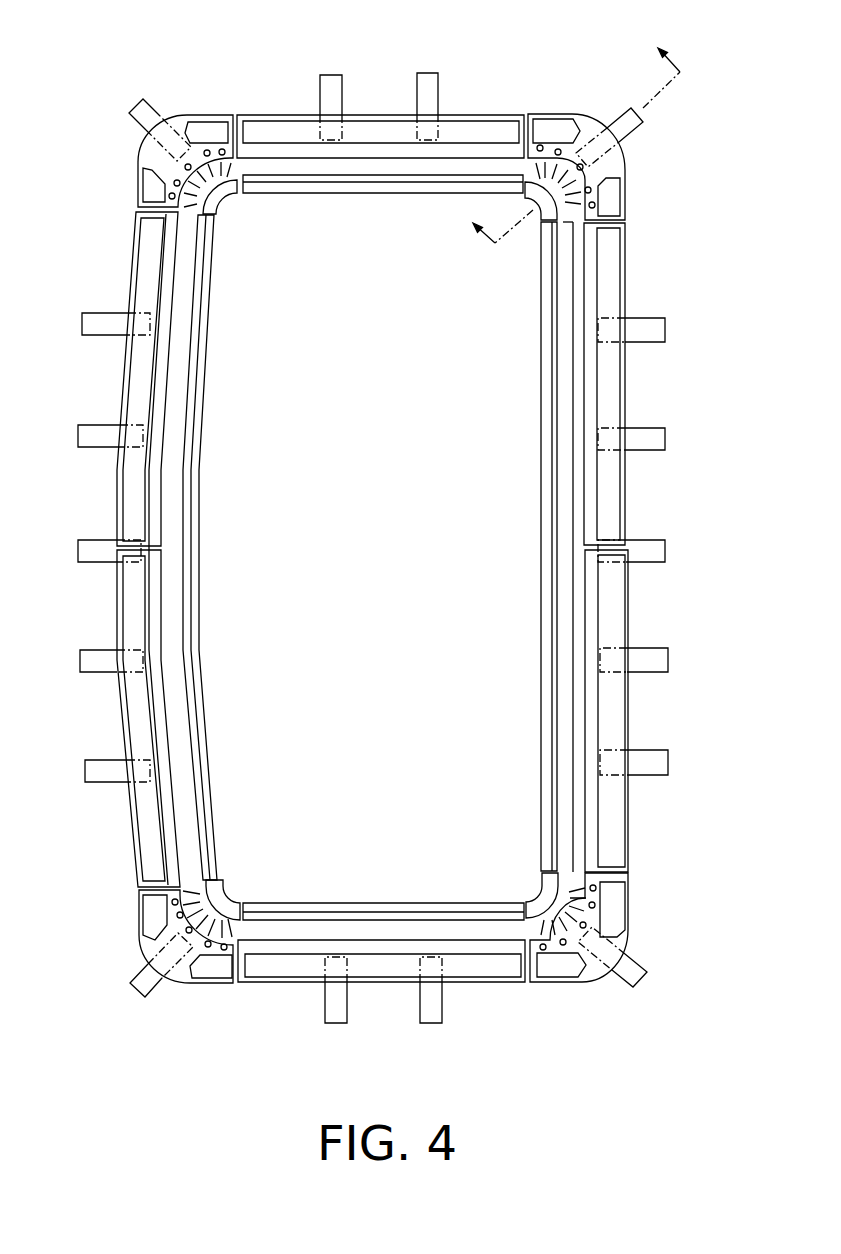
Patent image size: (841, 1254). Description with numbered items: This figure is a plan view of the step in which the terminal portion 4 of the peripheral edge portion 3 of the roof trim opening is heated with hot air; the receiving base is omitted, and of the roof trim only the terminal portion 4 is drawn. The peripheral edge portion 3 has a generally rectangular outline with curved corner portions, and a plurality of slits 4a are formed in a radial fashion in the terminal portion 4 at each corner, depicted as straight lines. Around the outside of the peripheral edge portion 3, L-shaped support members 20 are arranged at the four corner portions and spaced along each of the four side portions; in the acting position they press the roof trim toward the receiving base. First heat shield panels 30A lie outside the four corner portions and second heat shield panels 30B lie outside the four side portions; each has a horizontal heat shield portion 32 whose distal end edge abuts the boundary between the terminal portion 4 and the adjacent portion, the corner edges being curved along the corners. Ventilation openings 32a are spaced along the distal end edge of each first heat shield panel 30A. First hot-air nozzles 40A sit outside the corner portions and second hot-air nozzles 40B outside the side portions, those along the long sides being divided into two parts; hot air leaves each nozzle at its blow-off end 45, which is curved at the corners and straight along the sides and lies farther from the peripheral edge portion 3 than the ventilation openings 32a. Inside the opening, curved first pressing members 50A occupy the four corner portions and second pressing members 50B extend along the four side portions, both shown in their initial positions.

The peripheral edge portion 3 is at (553, 470).
The terminal portion 4 is at (568, 315).
The slits 4a is at (570, 224).
The support member 20 is at (150, 103).
The first heat shield panel 30A is at (140, 167).
The second heat shield panel 30B is at (276, 114).
The heat shield portion 32 is at (374, 537).
The ventilation openings 32a is at (206, 148).
The first hot-air nozzle 40A is at (162, 155).
The second hot-air nozzle 40B is at (619, 377).
The blow-off end 45 is at (287, 146).
The first pressing member 50A is at (230, 195).
The second pressing member 50B is at (368, 195).